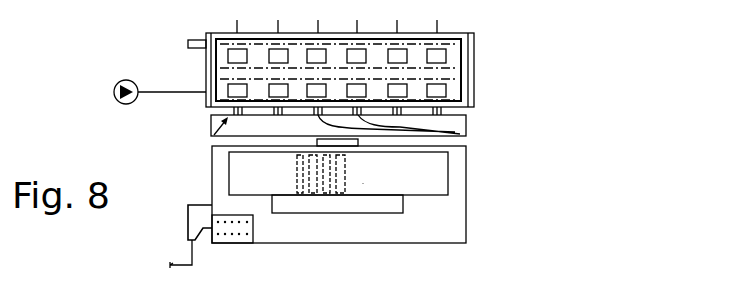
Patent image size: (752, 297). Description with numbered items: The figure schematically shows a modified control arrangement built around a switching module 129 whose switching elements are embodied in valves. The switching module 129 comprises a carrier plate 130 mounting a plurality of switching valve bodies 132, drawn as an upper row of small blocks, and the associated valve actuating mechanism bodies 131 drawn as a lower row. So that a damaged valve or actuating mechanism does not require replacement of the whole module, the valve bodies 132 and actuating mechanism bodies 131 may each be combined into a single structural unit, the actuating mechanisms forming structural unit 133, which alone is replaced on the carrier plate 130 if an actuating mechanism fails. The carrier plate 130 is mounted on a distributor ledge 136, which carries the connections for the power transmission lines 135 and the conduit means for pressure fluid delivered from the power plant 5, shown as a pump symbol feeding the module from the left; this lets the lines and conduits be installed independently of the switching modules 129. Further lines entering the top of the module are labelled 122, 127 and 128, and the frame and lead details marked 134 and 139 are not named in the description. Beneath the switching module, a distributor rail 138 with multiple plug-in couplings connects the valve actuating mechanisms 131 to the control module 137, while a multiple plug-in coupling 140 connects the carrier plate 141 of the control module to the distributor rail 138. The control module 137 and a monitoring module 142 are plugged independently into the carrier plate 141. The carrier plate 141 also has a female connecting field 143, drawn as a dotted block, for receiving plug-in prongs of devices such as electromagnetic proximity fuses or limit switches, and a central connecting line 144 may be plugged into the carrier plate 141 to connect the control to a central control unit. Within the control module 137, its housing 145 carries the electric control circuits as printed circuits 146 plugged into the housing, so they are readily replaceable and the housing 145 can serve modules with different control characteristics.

The power plant 5 is at (108, 99).
The supply line 122 is at (438, 16).
The supply line 127 is at (176, 16).
The supply line 128 is at (230, 16).
The switching module 129 is at (497, 67).
The carrier plate 130 is at (474, 100).
The valve actuating mechanism bodies 131 is at (220, 98).
The switching valve bodies 132 is at (236, 62).
The structural unit 133 is at (452, 87).
The valve block frame 134 is at (222, 50).
The power transmission lines 135 is at (397, 32).
The distributor ledge 136 is at (207, 55).
The control module 137 is at (438, 177).
The distributor rail 138 is at (212, 142).
The connecting leads 139 is at (455, 132).
The multiple plug-in coupling 140 is at (340, 140).
The carrier plate 141 is at (453, 220).
The monitoring module 142 is at (393, 204).
The female connecting field 143 is at (228, 228).
The central connecting line 144 is at (190, 251).
The housing 145 is at (363, 183).
The printed circuits 146 is at (326, 194).